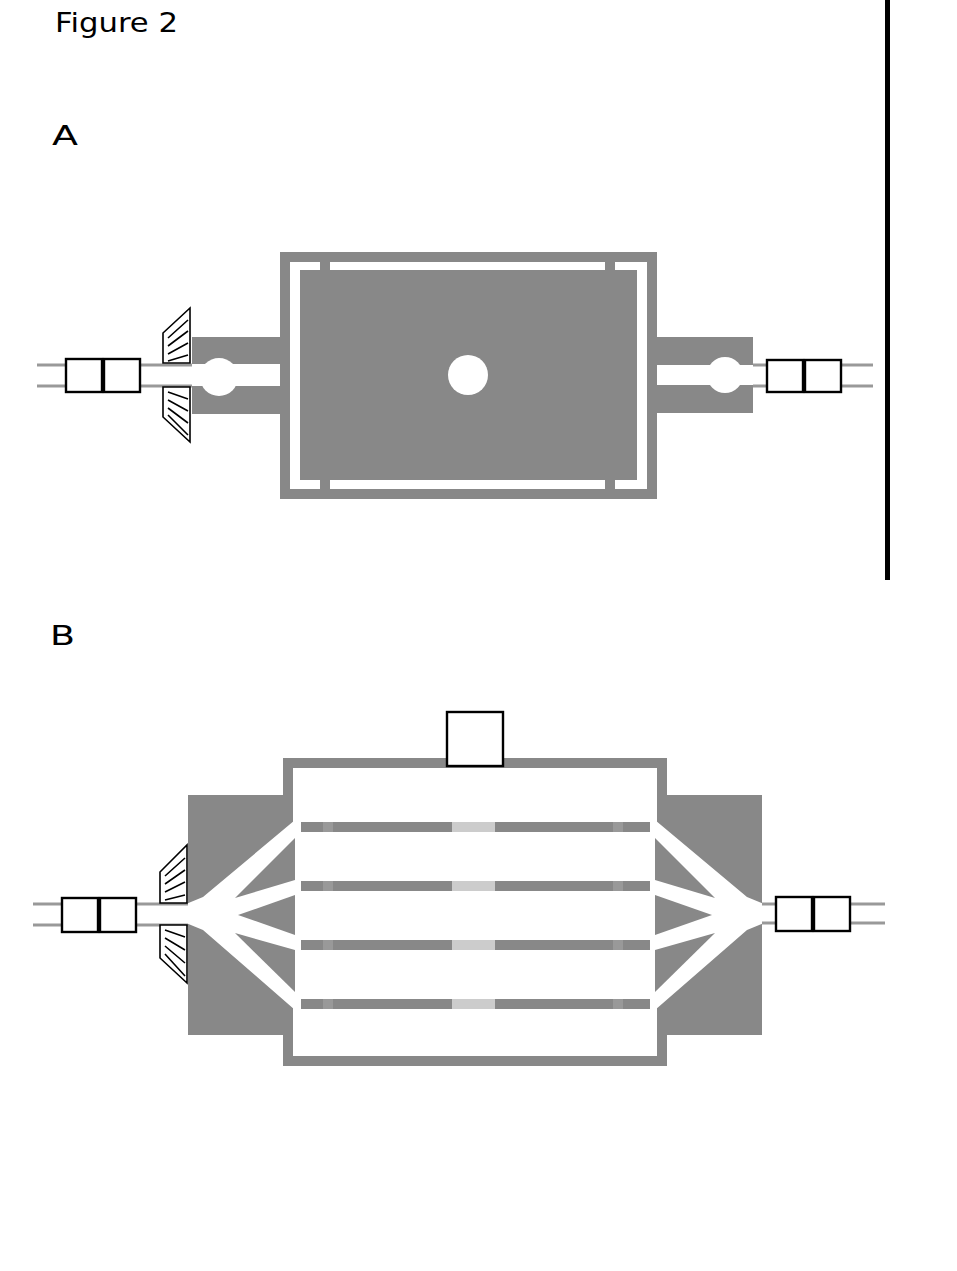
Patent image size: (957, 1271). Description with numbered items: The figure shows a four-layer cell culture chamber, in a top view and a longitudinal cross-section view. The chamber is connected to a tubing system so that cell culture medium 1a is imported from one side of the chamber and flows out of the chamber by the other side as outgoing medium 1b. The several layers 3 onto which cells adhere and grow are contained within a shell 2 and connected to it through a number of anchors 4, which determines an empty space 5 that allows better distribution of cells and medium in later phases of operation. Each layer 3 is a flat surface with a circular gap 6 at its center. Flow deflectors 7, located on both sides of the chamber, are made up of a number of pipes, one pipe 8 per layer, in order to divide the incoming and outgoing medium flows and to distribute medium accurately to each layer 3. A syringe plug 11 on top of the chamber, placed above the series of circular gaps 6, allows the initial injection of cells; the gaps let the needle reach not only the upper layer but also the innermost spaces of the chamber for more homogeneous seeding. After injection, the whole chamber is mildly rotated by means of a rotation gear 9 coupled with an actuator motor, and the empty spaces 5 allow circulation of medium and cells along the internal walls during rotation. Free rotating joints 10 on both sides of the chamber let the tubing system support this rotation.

The incoming cell culture medium flow 1a is at (819, 644).
The outgoing cell culture medium flow 1b is at (112, 645).
The shell 2 is at (473, 611).
The layers 3 is at (475, 603).
The anchors 4 is at (471, 588).
The empty space 5 is at (468, 222).
The circular gap 6 is at (441, 735).
The flow deflectors 7 is at (475, 640).
The pipe 8 is at (475, 692).
The rotation gear 9 is at (180, 435).
The free rotating joints 10 is at (456, 602).
The syringe plug 11 is at (475, 691).